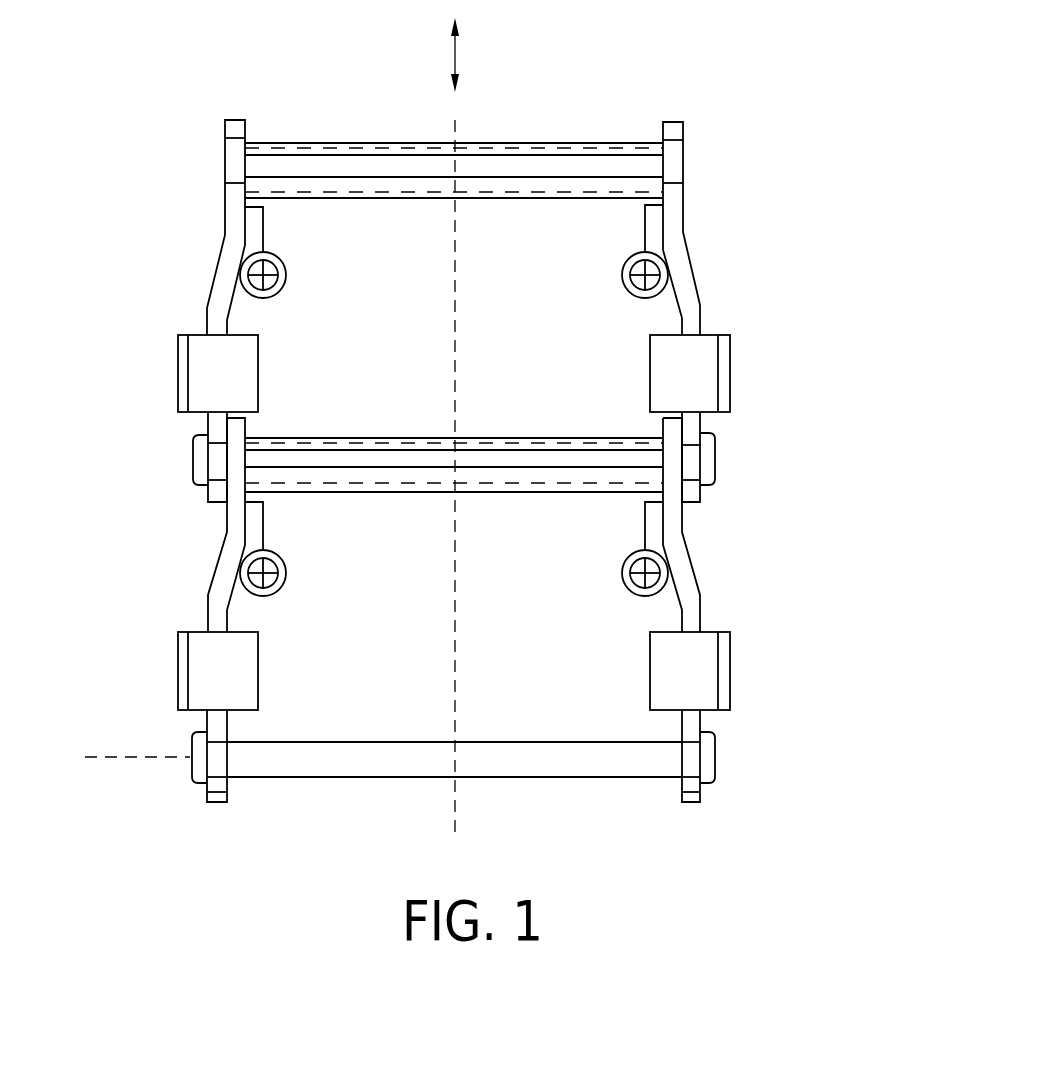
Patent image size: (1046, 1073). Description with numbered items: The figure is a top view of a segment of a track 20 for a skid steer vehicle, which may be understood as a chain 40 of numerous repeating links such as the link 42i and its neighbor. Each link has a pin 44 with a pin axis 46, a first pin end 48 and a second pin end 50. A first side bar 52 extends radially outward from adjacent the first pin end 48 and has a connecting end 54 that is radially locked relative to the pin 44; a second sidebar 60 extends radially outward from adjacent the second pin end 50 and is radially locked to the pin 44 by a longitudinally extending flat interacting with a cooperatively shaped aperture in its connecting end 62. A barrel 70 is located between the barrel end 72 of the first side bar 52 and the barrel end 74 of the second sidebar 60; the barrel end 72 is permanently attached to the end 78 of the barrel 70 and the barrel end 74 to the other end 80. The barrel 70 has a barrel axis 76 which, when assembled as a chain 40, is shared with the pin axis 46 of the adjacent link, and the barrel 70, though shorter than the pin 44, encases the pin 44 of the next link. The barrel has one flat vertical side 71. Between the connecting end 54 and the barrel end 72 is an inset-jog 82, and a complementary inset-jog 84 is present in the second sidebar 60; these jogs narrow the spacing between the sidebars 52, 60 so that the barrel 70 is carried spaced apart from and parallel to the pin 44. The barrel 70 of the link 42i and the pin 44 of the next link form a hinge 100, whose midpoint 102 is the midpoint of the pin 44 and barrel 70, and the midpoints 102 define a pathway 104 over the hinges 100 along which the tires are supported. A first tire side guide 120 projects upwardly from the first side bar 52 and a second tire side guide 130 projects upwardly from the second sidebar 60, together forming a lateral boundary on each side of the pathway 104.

The track 20 is at (775, 98).
The chain 40 is at (775, 146).
The link 42i is at (697, 283).
The pin 44 is at (454, 783).
The pin axis 46 is at (137, 741).
The first pin end 48 is at (764, 754).
The second pin end 50 is at (157, 778).
The first side bar 52 is at (703, 313).
The connecting end 54 is at (741, 485).
The second sidebar 60 is at (203, 314).
The connecting end 62 is at (171, 475).
The barrel 70 is at (454, 140).
The flat vertical side 71 is at (454, 444).
The barrel end 72 is at (711, 102).
The barrel end 74 is at (200, 100).
The barrel axis 76 is at (163, 182).
The end of barrel 78 is at (630, 137).
The other end of barrel 80 is at (281, 137).
The inset-jog 82 is at (740, 202).
The inset-jog 84 is at (172, 200).
The hinge 100 is at (454, 432).
The midpoint 102 is at (193, 462).
The pathway 104 is at (505, 429).
The first tire side guide 120 is at (745, 373).
The second tire side guide 130 is at (178, 373).